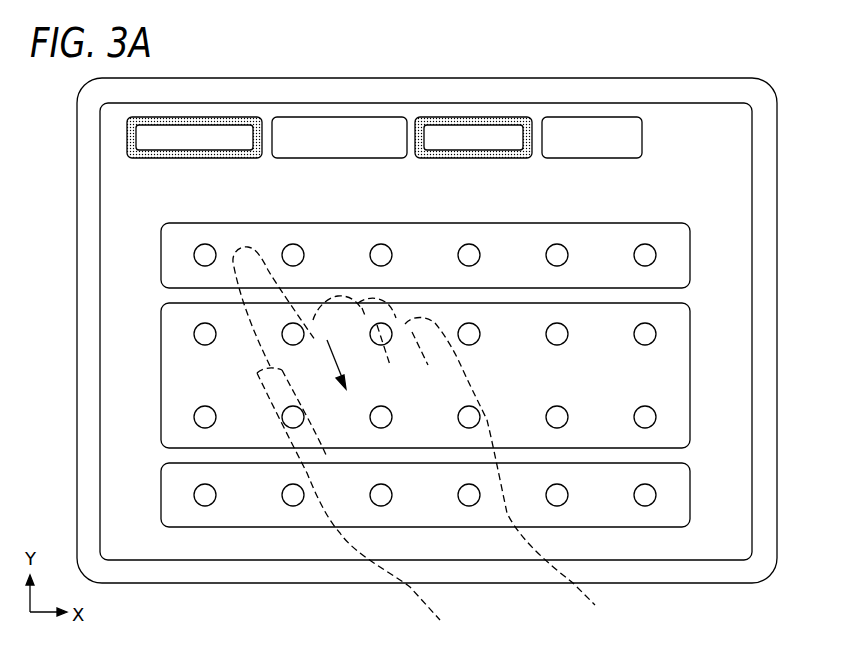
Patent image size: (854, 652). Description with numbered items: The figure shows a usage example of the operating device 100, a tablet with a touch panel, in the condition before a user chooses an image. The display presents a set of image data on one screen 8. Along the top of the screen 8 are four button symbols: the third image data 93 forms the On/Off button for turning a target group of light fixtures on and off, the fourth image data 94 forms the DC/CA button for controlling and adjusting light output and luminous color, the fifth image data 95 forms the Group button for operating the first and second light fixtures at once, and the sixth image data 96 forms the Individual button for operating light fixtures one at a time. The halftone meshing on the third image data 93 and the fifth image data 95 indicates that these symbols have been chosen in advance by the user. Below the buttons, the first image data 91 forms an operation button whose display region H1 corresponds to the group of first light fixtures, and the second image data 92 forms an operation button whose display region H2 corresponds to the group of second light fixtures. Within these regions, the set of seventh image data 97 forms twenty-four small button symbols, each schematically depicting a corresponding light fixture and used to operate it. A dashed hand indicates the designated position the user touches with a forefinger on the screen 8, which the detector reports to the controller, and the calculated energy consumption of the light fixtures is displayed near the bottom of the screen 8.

The operating device 100 is at (758, 94).
The screen 8 is at (734, 188).
The third image data 93 is at (195, 158).
The fourth image data 94 is at (337, 159).
The fifth image data 95 is at (477, 159).
The sixth image data 96 is at (592, 158).
The first image data 91 is at (677, 270).
The second image data 92 is at (173, 373).
The seventh image data 97 is at (198, 495).
The display region H1 is at (707, 497).
The display region H2 is at (160, 323).